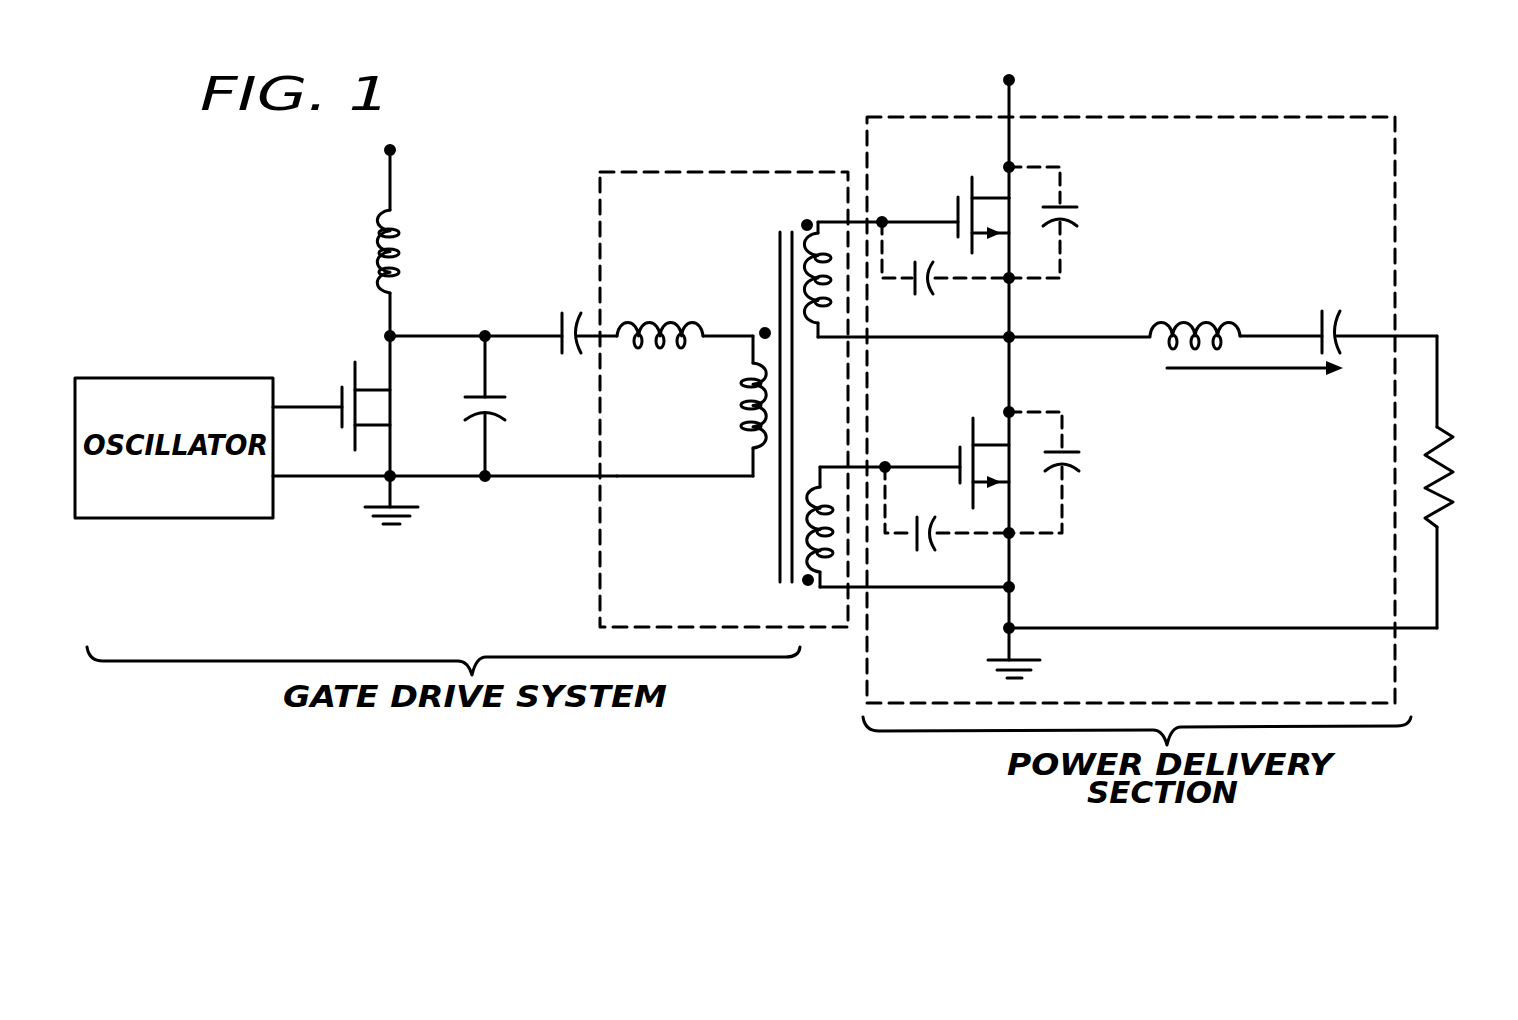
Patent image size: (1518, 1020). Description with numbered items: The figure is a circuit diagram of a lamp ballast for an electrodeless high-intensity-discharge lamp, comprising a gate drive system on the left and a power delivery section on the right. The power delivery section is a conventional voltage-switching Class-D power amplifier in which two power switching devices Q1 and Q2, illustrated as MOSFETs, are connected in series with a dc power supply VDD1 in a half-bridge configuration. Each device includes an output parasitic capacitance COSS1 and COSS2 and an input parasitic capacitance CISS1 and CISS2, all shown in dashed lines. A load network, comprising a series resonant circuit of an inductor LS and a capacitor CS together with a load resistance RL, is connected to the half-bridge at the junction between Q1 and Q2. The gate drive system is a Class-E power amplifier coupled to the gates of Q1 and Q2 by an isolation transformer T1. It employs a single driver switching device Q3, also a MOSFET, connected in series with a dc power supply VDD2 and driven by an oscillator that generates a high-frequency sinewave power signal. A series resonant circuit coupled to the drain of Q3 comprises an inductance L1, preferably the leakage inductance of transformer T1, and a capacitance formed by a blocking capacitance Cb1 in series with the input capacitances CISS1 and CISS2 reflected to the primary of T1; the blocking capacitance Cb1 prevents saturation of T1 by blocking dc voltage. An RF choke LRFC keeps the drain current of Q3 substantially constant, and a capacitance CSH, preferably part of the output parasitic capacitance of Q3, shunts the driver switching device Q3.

The dc power supply VDD2 is at (429, 171).
The RF choke LRFC is at (422, 273).
The driver switching device Q3 is at (355, 375).
The capacitance CSH is at (474, 396).
The blocking capacitance Cb1 is at (562, 312).
The inductance L1 is at (675, 318).
The isolation transformer T1 is at (700, 172).
The dc power supply VDD1 is at (1048, 127).
The power switching device Q1 is at (972, 183).
The power switching device Q2 is at (975, 427).
The output parasitic capacitance COSS1 is at (1078, 208).
The output parasitic capacitance COSS2 is at (1080, 455).
The input parasitic capacitance CISS1 is at (915, 294).
The input parasitic capacitance CISS2 is at (917, 550).
The inductor LS is at (1190, 318).
The capacitor CS is at (1325, 312).
The load resistance RL is at (1251, 527).